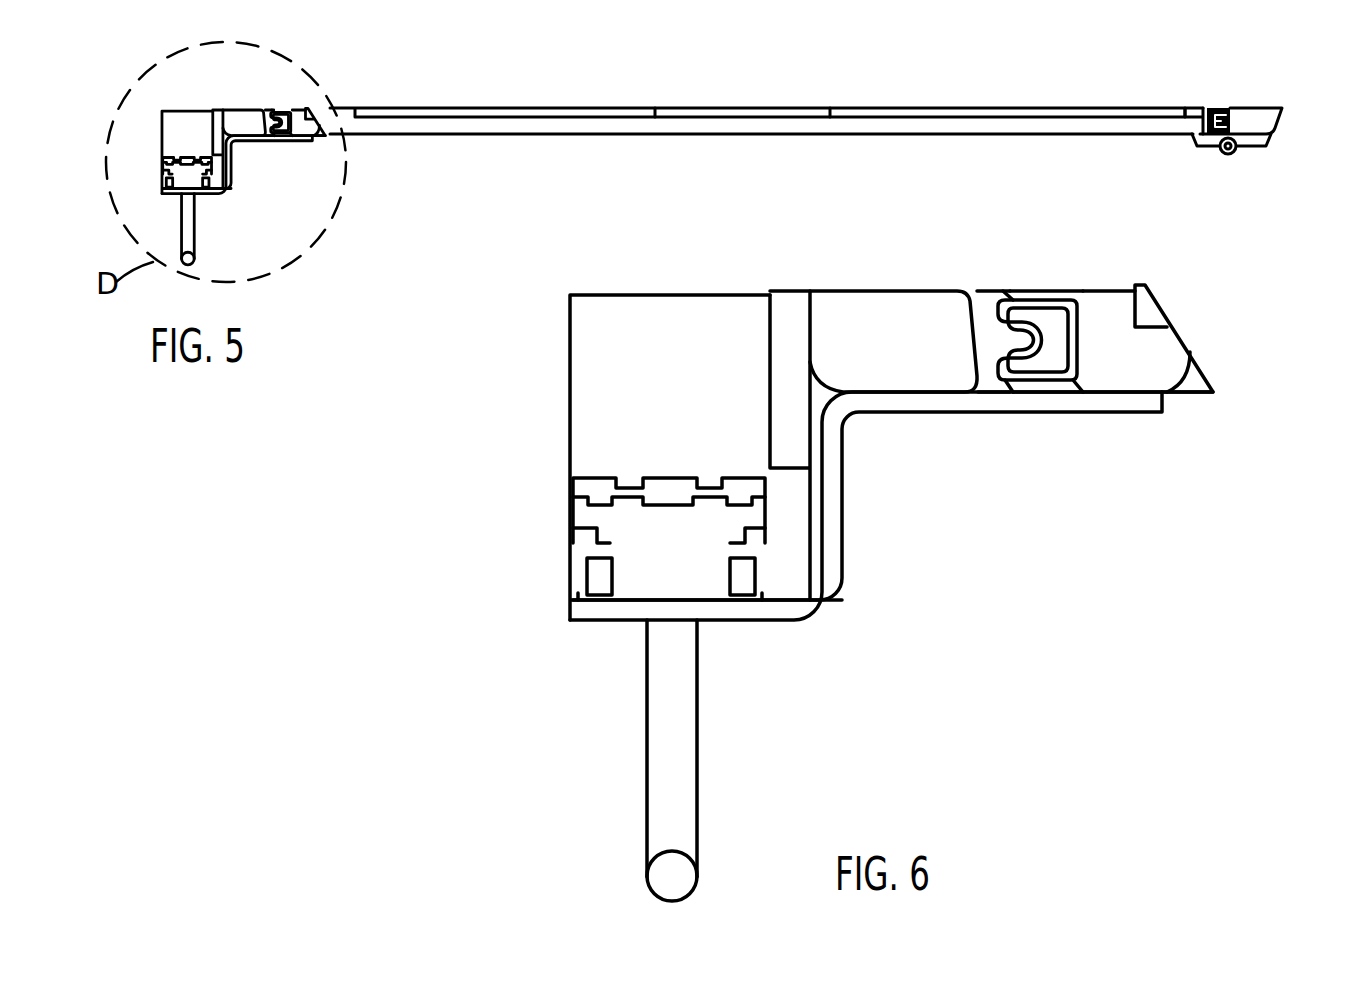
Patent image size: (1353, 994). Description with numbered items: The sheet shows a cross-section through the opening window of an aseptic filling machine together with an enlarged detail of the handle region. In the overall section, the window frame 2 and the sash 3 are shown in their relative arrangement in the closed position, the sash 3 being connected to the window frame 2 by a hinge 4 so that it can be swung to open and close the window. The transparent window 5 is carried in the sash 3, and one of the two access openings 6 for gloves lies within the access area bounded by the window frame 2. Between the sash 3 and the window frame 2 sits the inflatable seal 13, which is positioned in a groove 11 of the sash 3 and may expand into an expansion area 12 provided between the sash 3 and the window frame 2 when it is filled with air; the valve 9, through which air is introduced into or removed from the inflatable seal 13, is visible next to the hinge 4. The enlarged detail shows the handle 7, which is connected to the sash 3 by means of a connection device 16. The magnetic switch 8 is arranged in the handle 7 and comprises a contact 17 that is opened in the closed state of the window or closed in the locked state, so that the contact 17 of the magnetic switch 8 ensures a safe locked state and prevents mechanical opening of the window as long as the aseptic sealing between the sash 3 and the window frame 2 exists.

In FIG. 6, the window frame 2 is at (866, 300).
In FIG. 5, the window frame 2 is at (238, 118).
In FIG. 6, the sash 3 is at (1110, 300).
In FIG. 5, the sash 3 is at (300, 110).
In FIG. 5, the hinge 4 is at (1250, 146).
In FIG. 5, the window 5 is at (745, 134).
In FIG. 5, the access opening 6 is at (455, 108).
In FIG. 6, the handle 7 is at (683, 775).
In FIG. 5, the handle 7 is at (195, 226).
In FIG. 6, the magnetic switch 8 is at (625, 372).
In FIG. 5, the magnetic switch 8 is at (190, 123).
In FIG. 5, the valve 9 is at (1226, 154).
In FIG. 6, the groove 11 is at (1082, 386).
In FIG. 6, the expansion area 12 is at (990, 350).
In FIG. 5, the expansion area 12 is at (268, 136).
In FIG. 6, the inflatable seal 13 is at (1037, 300).
In FIG. 5, the inflatable seal 13 is at (300, 138).
In FIG. 6, the connection device 16 is at (832, 556).
In FIG. 5, the connection device 16 is at (243, 165).
In FIG. 6, the contact 17 is at (793, 300).
In FIG. 5, the contact 17 is at (218, 149).